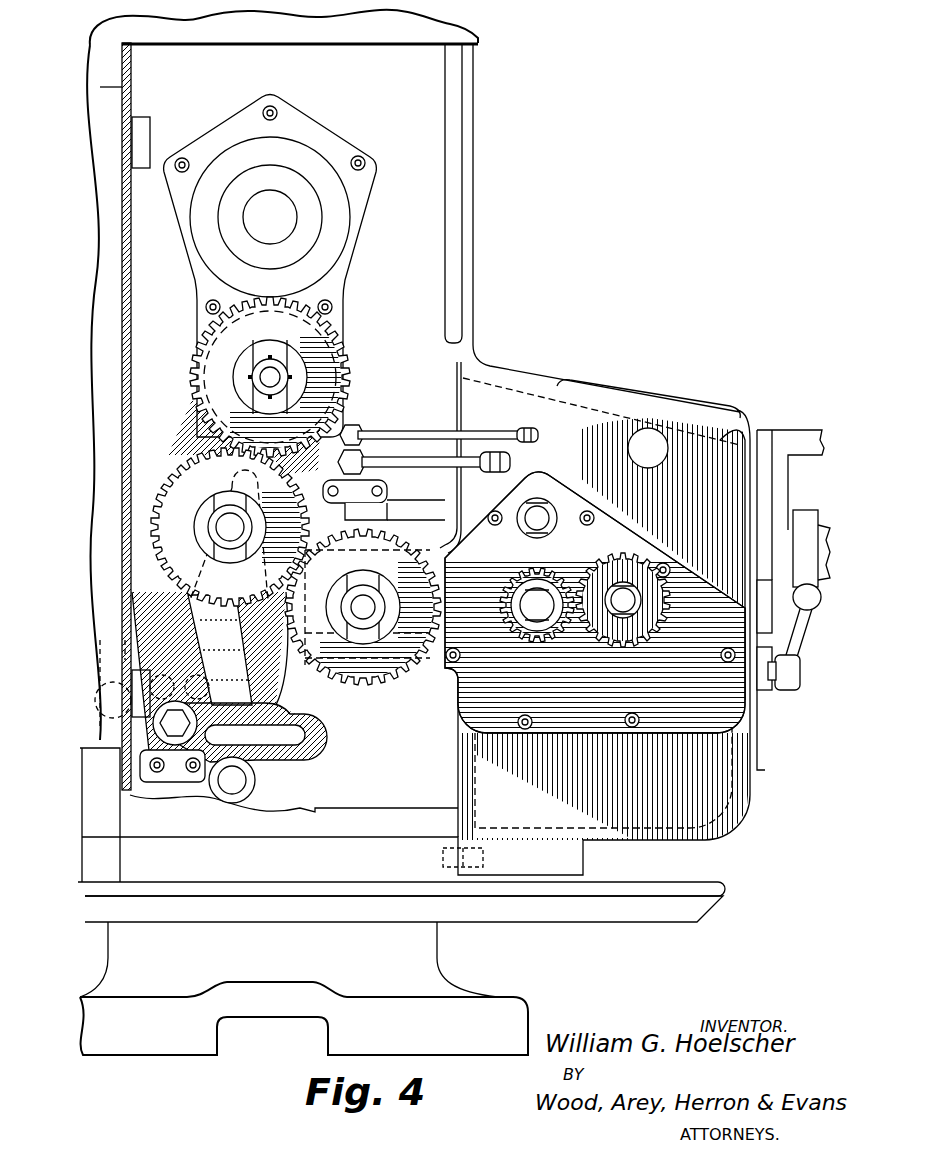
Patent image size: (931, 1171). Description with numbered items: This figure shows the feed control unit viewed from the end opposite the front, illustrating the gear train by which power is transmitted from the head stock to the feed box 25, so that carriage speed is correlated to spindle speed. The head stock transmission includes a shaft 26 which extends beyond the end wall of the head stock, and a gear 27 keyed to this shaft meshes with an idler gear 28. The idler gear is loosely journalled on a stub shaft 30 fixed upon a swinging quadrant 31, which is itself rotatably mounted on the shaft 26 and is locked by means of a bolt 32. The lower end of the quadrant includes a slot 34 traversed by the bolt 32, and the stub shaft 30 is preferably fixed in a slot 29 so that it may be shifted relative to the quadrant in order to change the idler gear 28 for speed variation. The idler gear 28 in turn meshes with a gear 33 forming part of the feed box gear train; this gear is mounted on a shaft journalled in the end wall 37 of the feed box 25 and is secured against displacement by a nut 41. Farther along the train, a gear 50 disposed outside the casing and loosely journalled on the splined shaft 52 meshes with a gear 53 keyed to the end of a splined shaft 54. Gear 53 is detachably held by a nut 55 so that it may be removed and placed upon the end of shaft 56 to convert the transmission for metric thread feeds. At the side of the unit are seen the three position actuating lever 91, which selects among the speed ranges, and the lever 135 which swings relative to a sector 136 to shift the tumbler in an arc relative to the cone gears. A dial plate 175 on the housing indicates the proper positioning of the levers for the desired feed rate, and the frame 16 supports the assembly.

The frame 16 is at (473, 172).
The feed box 25 is at (735, 428).
The shaft 26 is at (282, 378).
The gear 27 is at (310, 368).
The idler gear 28 is at (167, 467).
The slot 29 is at (222, 496).
The stub shaft 30 is at (208, 527).
The swinging quadrant 31 is at (157, 580).
The bolt 32 is at (178, 745).
The gear 33 is at (362, 683).
The slot 34 is at (291, 758).
The end wall 37 is at (700, 780).
The nut 41 is at (384, 592).
The gear 50 is at (542, 574).
The splined shaft 52 is at (548, 637).
The gear 53 is at (615, 643).
The splined shaft 54 is at (626, 648).
The nut 55 is at (600, 572).
The shaft 56 is at (553, 522).
The actuating lever 91 is at (798, 654).
The lever 135 is at (790, 492).
The sector 136 is at (772, 432).
The dial plate 175 is at (706, 401).